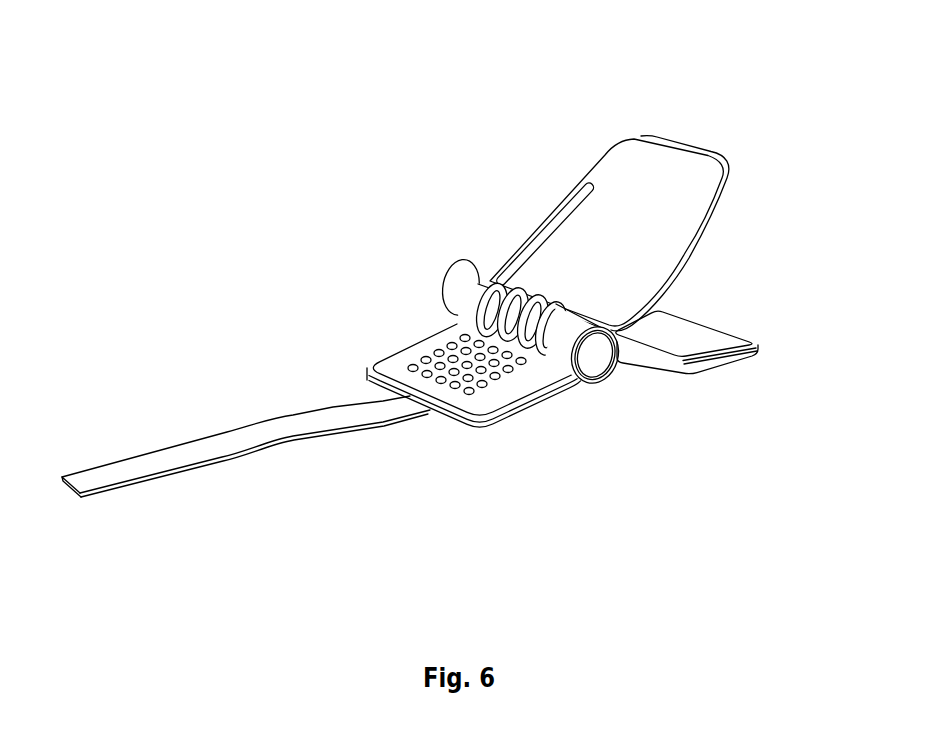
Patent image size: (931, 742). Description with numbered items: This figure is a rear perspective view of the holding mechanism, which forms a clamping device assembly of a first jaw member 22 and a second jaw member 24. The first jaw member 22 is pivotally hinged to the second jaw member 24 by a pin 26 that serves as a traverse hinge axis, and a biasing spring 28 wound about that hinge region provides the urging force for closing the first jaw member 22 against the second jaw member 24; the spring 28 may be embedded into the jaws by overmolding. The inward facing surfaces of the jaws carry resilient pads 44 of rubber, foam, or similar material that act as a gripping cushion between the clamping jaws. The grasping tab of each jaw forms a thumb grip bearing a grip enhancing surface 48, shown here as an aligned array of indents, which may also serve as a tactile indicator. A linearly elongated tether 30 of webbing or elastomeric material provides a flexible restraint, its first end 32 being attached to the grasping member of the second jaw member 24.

The first jaw member 22 is at (657, 183).
The second jaw member 24 is at (688, 372).
The pin 26 is at (593, 367).
The biasing spring 28 is at (535, 226).
The tether 30 is at (291, 440).
The first end 32 is at (147, 468).
The resilient pad 44 is at (697, 250).
The grip enhancing surface 48 is at (429, 361).